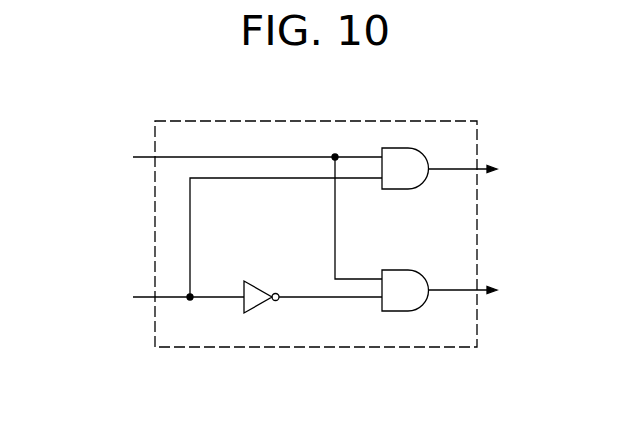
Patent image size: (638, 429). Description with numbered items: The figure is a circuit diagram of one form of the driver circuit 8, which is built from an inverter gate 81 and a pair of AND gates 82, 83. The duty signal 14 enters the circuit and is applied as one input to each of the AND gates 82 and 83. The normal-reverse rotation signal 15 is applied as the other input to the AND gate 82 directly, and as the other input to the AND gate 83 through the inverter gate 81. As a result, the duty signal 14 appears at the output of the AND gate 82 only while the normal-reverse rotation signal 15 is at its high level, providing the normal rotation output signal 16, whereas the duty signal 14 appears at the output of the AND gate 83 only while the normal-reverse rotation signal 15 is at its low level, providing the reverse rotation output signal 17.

The driver circuit 8 is at (477, 335).
The duty signal 14 is at (239, 211).
The normal-reverse rotation signal 15 is at (239, 245).
The normal rotation output signal 16 is at (483, 170).
The reverse rotation output signal 17 is at (483, 291).
The inverter gate 81 is at (260, 299).
The AND gate 82 is at (400, 189).
The AND gate 83 is at (411, 309).